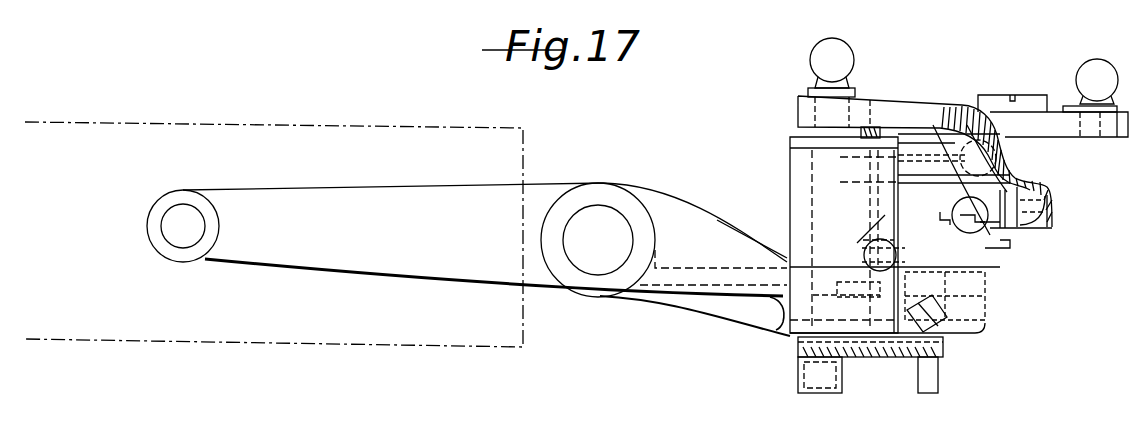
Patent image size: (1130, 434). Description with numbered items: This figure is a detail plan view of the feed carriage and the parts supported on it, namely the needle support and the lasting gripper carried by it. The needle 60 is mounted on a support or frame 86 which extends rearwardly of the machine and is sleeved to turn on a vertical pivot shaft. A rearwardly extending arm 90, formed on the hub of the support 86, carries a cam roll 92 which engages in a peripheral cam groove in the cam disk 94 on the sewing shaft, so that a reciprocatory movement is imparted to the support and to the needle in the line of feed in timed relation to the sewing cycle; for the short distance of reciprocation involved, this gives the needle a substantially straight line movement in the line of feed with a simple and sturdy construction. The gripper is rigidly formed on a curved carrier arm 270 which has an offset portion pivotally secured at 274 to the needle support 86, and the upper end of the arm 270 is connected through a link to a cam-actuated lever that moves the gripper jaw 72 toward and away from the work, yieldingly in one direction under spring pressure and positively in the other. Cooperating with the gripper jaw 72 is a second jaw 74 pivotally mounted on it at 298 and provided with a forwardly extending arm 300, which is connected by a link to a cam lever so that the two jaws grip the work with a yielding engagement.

The cam disk 94 is at (397, 127).
The cam roll 92 is at (185, 263).
The rearwardly extending arm 90 is at (388, 285).
The needle support 86 is at (790, 320).
The needle 60 is at (878, 250).
The pivot 274 is at (828, 130).
The curved carrier arm 270 is at (906, 111).
The pivot 298 is at (1001, 100).
The forwardly extending arm 300 is at (1073, 133).
The gripper jaw 72 is at (1045, 205).
The second jaw 74 is at (1005, 228).